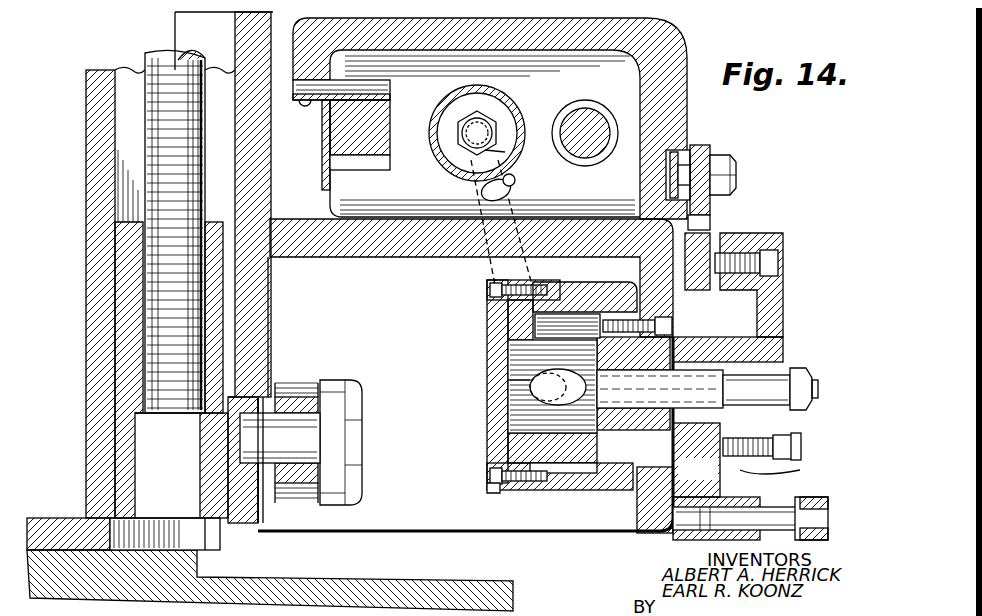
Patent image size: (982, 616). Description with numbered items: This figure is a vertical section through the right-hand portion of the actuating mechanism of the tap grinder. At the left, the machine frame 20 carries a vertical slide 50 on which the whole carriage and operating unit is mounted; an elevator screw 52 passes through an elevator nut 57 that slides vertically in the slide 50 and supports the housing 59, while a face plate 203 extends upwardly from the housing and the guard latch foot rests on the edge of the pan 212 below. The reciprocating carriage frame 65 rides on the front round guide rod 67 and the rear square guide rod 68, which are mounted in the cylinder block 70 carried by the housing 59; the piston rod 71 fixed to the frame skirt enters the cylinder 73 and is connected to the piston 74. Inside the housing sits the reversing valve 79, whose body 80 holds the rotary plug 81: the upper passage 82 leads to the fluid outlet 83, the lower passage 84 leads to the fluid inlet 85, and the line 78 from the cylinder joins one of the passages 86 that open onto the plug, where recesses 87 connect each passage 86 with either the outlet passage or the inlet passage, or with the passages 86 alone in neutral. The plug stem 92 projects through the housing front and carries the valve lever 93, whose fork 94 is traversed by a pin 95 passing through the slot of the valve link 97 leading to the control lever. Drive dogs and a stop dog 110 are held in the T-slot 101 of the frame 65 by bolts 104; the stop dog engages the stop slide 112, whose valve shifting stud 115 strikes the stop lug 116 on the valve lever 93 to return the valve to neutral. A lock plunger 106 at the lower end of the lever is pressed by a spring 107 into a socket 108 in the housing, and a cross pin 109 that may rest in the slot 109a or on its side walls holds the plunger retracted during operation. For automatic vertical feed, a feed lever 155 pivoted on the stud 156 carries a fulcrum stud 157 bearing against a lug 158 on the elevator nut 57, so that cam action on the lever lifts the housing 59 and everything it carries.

The frame 20 is at (60, 518).
The vertical slide 50 is at (223, 542).
The elevator screw 52 is at (167, 128).
The elevator nut 57 is at (120, 258).
The housing 59 is at (415, 257).
The frame 65 is at (520, 30).
The front round guide rod 67 is at (592, 110).
The rear square guide rod 68 is at (387, 113).
The cylinder block 70 is at (518, 189).
The piston rod 71 is at (500, 115).
The cylinder 73 is at (447, 143).
The piston 74 is at (462, 158).
The line 78 is at (500, 272).
The valve 79 is at (480, 347).
The body 80 is at (490, 493).
The rotary plug 81 is at (503, 431).
The passage 82 is at (582, 312).
The fluid outlet 83 is at (585, 287).
The lower passage 84 is at (530, 490).
The fluid inlet 85 is at (560, 478).
The passages 86 is at (513, 407).
The recesses 87 is at (508, 386).
The stem 92 is at (748, 352).
The valve lever 93 is at (782, 305).
The fork 94 is at (802, 456).
The pin 95 is at (800, 445).
The valve link 97 is at (800, 471).
The slot 101 is at (668, 170).
The bolts 104 is at (735, 166).
The lock plunger 106 is at (690, 539).
The spring 107 is at (716, 490).
The socket 108 is at (648, 506).
The cross pin 109 is at (828, 528).
The slot 109a is at (770, 497).
The stop dog 110 is at (706, 150).
The stop slide 112 is at (715, 238).
The valve shifting stud 115 is at (700, 290).
The stop lug 116 is at (738, 292).
The feed lever 155 is at (290, 400).
The stud 156 is at (336, 390).
The fulcrum stud 157 is at (280, 438).
The lug 158 is at (264, 506).
The face plate 203 is at (255, 183).
The pan 212 is at (372, 578).